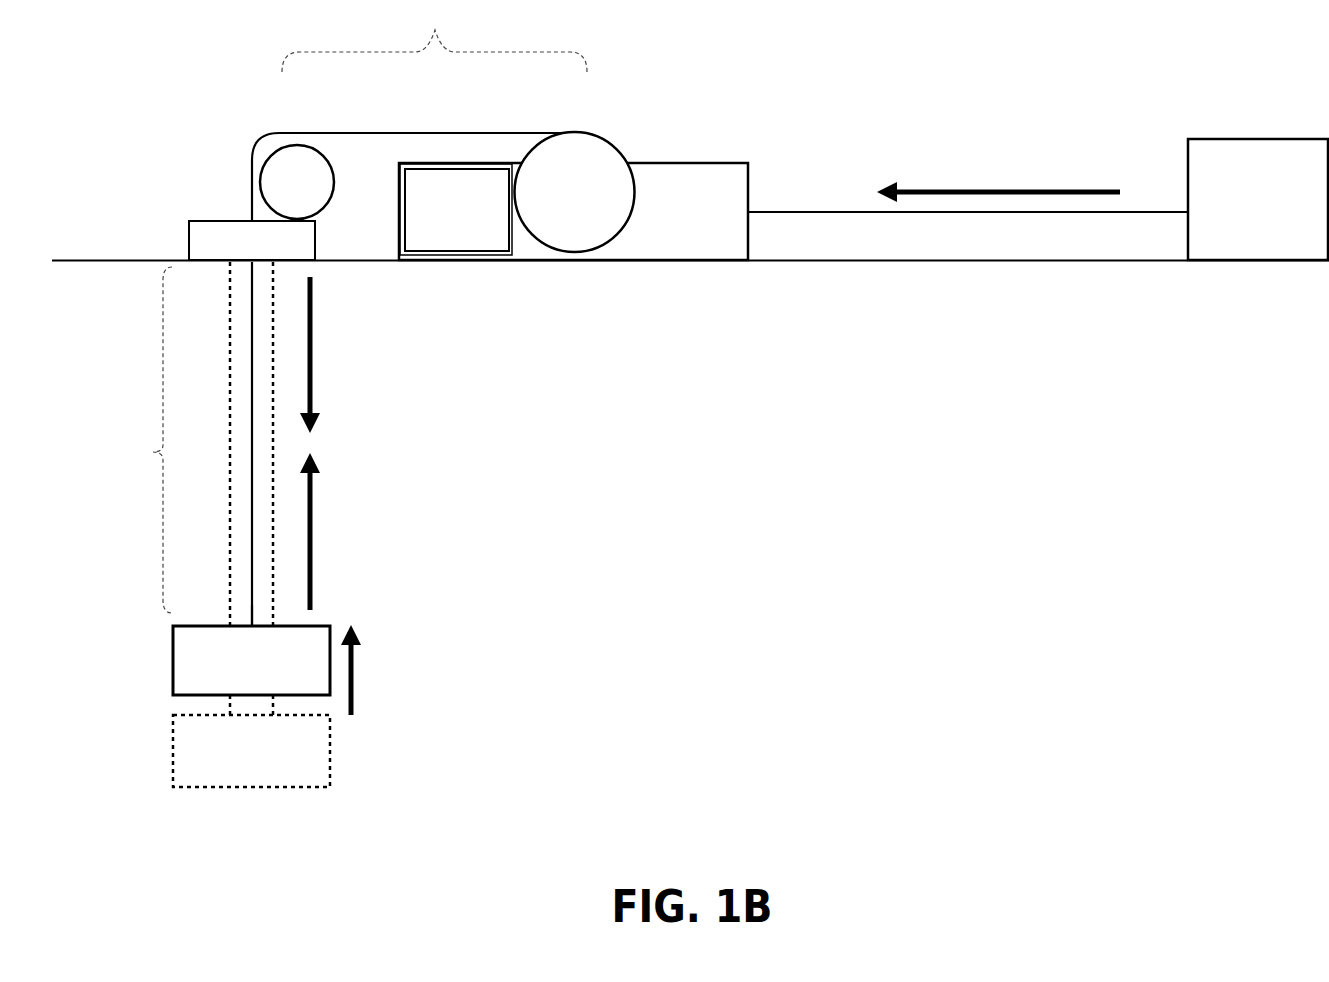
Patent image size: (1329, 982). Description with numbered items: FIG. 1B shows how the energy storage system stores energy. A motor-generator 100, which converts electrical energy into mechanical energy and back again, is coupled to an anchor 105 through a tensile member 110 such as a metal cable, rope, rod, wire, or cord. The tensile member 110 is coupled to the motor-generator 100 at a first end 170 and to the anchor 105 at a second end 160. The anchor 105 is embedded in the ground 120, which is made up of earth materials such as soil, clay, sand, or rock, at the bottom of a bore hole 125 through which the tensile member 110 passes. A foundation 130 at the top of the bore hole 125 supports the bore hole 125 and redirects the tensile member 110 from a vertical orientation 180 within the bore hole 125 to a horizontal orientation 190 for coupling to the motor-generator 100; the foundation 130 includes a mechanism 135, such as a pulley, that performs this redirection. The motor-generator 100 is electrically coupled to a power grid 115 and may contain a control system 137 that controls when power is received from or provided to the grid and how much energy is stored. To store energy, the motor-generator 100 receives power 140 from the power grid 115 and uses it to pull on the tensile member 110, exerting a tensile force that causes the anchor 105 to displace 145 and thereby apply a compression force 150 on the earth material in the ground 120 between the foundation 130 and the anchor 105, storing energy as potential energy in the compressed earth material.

The motor-generator 100 is at (573, 211).
The anchor 105 is at (251, 706).
The tensile member 110 is at (418, 130).
The power grid 115 is at (1038, 199).
The ground 120 is at (690, 361).
The bore hole 125 is at (227, 495).
The foundation 130 is at (207, 217).
The mechanism 135 is at (277, 146).
The control system 137 is at (456, 209).
The power 140 is at (941, 181).
The displacement 145 is at (360, 678).
The compression force 150 is at (328, 379).
The second end 160 is at (264, 617).
The first end 170 is at (577, 127).
The vertical orientation 180 is at (139, 440).
The horizontal orientation 190 is at (434, 37).